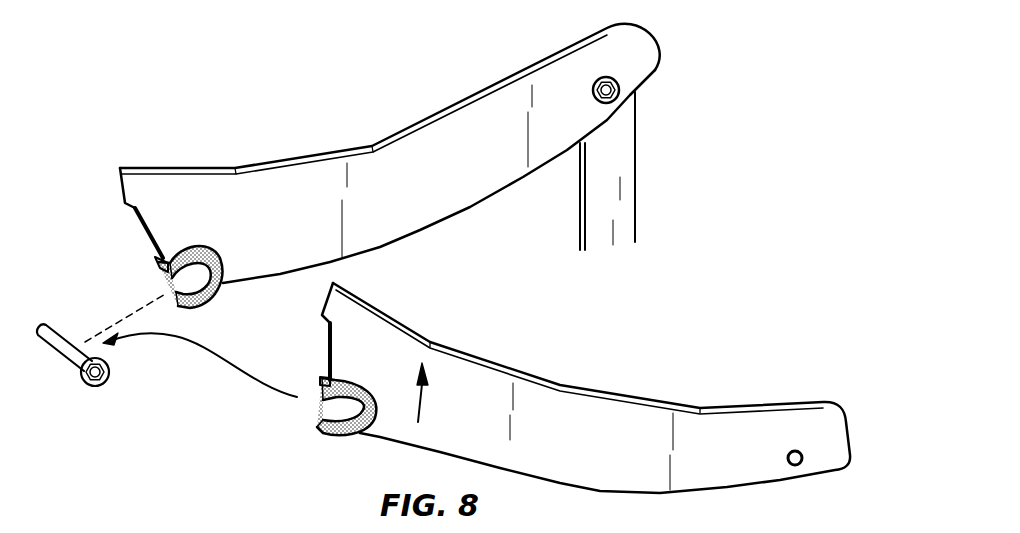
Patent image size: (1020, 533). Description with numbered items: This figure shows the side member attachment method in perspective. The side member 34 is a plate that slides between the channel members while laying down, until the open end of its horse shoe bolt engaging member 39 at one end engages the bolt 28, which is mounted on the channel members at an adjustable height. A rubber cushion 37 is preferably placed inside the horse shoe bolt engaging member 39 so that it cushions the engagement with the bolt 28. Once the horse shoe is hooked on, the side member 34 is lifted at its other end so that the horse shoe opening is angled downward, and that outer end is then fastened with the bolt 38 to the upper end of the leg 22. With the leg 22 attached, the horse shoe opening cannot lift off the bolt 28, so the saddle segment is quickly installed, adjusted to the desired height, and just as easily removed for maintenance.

The side member 34 is at (434, 200).
The leg 22 is at (623, 159).
The bolt 38 is at (622, 83).
The rubber cushion 37 is at (168, 292).
The horse shoe bolt engaging member 39 is at (193, 309).
The bolt 28 is at (58, 352).